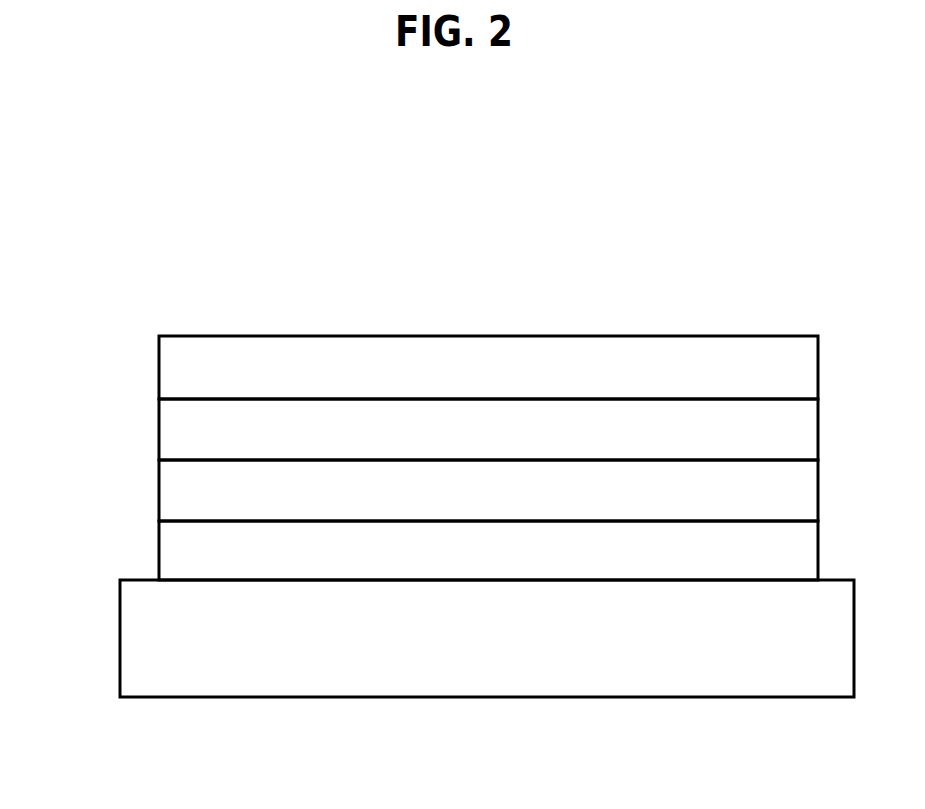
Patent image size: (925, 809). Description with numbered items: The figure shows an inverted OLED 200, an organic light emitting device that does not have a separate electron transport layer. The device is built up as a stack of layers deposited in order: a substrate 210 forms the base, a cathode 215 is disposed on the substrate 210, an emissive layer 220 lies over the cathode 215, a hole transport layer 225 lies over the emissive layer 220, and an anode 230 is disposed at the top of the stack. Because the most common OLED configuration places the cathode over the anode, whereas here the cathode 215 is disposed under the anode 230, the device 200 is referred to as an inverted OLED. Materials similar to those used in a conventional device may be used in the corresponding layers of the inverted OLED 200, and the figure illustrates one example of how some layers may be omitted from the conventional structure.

The inverted OLED 200 is at (317, 284).
The substrate 210 is at (442, 698).
The cathode 215 is at (159, 548).
The emissive layer 220 is at (159, 490).
The hole transport layer 225 is at (159, 428).
The anode 230 is at (159, 367).